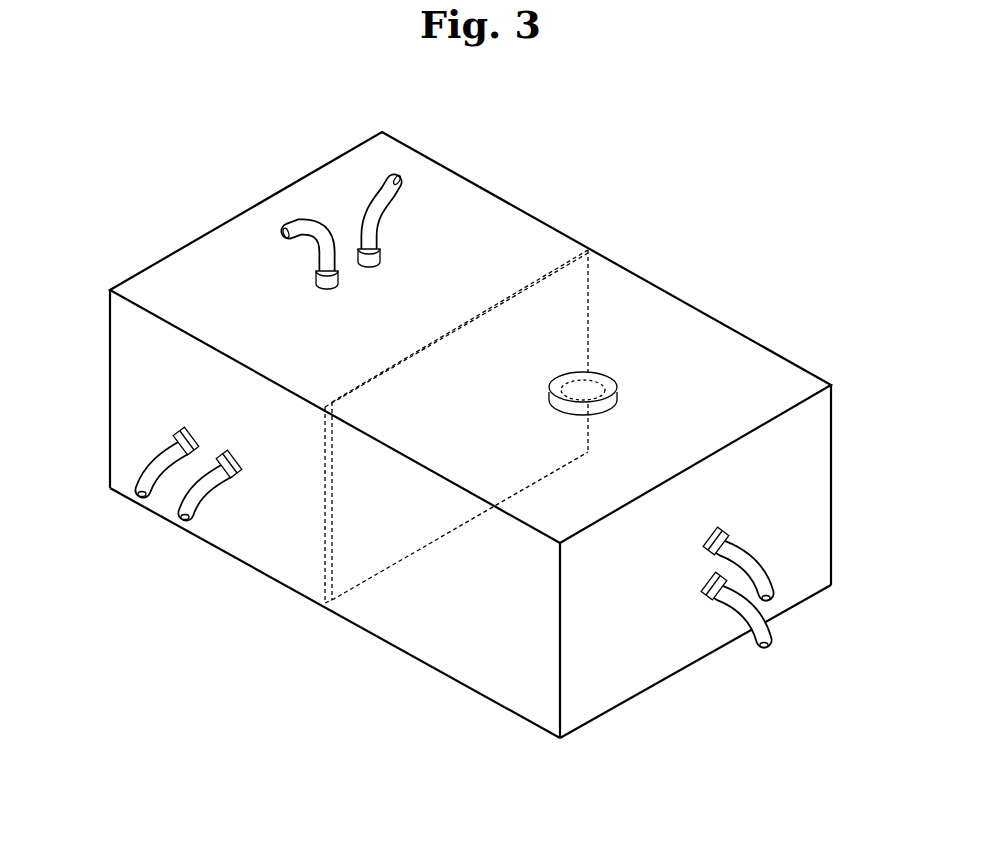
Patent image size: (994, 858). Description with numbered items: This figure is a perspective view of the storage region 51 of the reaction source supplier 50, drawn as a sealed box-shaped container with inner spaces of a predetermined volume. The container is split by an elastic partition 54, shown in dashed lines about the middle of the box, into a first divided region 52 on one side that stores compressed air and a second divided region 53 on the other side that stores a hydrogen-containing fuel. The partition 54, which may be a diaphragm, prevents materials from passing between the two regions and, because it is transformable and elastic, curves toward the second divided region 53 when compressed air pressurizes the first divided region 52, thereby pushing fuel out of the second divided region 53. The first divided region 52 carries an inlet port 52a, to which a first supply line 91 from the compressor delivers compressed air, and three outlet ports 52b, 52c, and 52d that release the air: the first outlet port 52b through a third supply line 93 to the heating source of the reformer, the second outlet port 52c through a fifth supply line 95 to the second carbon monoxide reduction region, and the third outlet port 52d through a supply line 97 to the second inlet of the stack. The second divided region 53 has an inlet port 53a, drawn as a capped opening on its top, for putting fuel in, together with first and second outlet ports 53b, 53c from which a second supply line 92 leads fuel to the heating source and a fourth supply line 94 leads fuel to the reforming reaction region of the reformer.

The reaction source supplier 50 is at (762, 179).
The storage region 51 is at (658, 237).
The first divided region 52 is at (570, 222).
The second divided region 53 is at (630, 275).
The elastic partition 54 is at (327, 563).
The inlet port 52a is at (313, 280).
The first outlet port 52b is at (242, 477).
The second outlet port 52c is at (180, 433).
The third outlet port 52d is at (357, 253).
The inlet port 53a is at (598, 382).
The first outlet port 53b is at (725, 535).
The second outlet port 53c is at (710, 602).
The first supply line 91 is at (300, 217).
The second supply line 92 is at (758, 562).
The third supply line 93 is at (210, 490).
The fourth supply line 94 is at (742, 617).
The fifth supply line 95 is at (153, 455).
The supply line 97 is at (382, 183).